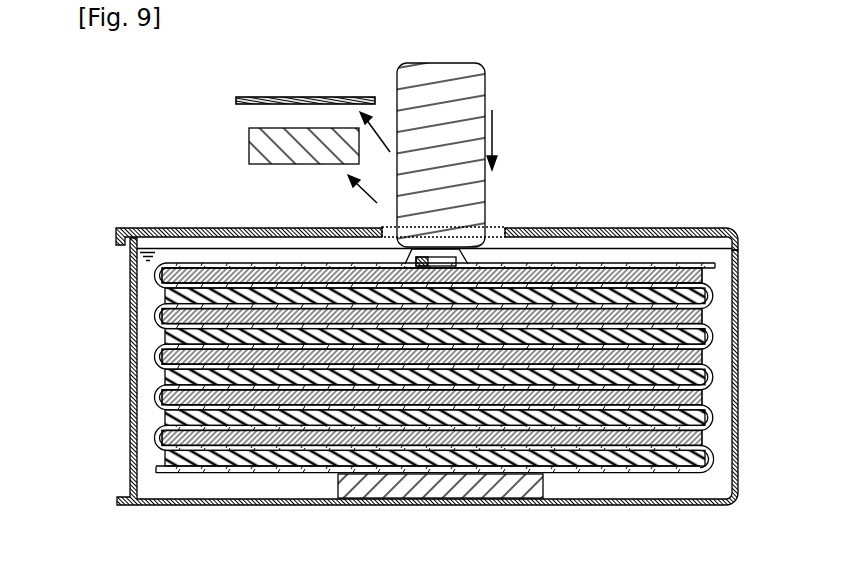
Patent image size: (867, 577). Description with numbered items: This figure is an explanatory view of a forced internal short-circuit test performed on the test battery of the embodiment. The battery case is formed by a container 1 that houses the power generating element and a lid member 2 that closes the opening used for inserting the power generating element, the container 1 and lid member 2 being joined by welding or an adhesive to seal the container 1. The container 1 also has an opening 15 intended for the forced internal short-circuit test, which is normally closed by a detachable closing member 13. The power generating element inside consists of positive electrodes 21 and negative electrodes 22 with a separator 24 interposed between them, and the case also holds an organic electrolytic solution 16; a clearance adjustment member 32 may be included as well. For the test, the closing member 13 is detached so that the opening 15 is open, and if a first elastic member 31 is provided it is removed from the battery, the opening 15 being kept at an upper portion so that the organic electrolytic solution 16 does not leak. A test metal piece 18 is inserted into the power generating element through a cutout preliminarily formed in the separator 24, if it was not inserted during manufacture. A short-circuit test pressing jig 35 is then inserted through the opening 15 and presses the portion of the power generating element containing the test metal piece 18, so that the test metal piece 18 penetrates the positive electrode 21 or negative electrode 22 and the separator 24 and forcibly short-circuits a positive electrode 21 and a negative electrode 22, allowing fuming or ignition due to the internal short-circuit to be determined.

The container 1 is at (582, 230).
The lid member 2 is at (130, 368).
The closing member 13 is at (280, 99).
The opening 15 is at (386, 232).
The organic electrolytic solution 16 is at (718, 286).
The test metal piece 18 is at (440, 266).
The positive electrode 21 is at (229, 284).
The negative electrode 22 is at (263, 300).
The separator 24 is at (200, 266).
The elastic member 31 is at (267, 153).
The clearance adjustment member 32 is at (452, 488).
The short-circuit test pressing jig 35 is at (458, 100).